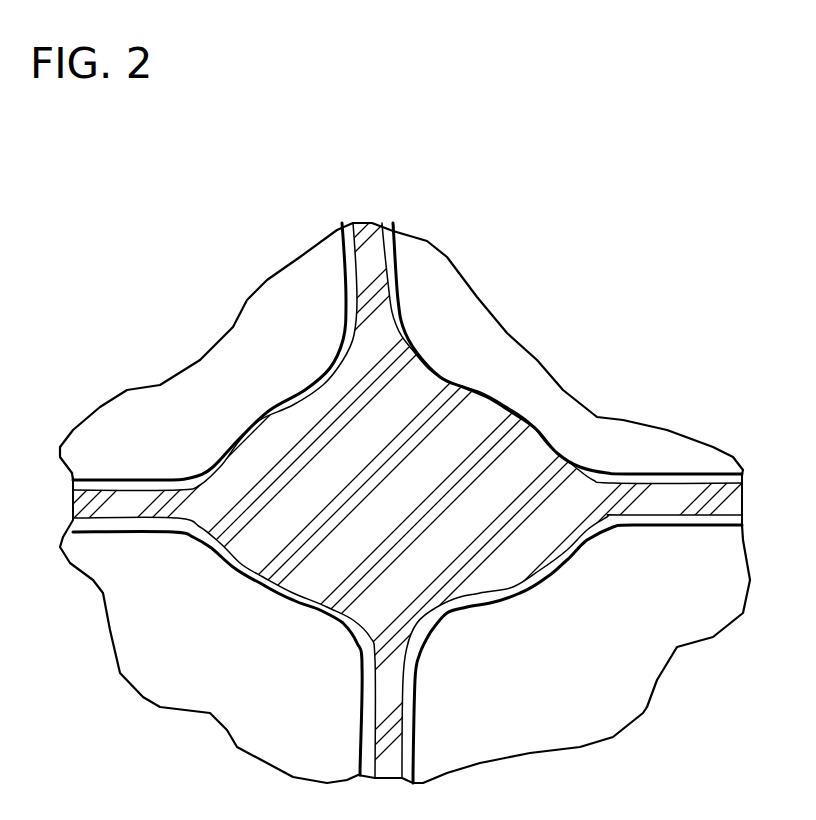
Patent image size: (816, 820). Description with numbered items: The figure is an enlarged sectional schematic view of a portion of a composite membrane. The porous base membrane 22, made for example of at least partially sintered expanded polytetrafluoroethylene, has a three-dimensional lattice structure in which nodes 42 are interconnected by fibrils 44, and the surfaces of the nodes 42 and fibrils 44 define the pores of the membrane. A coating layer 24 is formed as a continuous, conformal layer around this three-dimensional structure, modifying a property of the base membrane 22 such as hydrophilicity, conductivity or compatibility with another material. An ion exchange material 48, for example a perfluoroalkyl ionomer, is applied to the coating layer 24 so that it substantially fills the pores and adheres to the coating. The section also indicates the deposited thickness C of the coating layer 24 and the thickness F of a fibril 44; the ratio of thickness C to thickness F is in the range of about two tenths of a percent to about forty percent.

The porous base membrane 22 is at (337, 360).
The coating layer 24 is at (628, 473).
The nodes 42 is at (430, 595).
The fibrils 44 is at (674, 500).
The ion exchange material 48 is at (430, 277).
The thickness of coating C is at (658, 533).
The thickness of fibril F is at (713, 563).